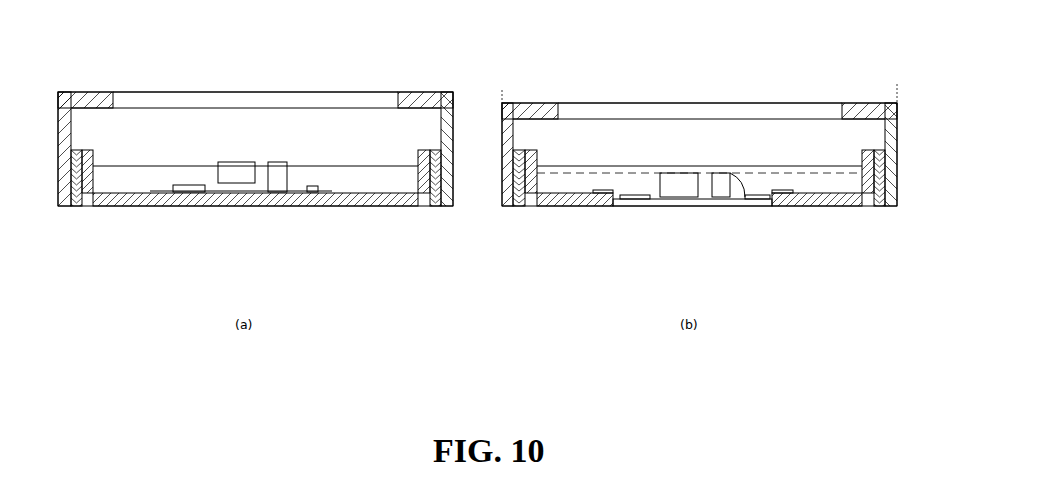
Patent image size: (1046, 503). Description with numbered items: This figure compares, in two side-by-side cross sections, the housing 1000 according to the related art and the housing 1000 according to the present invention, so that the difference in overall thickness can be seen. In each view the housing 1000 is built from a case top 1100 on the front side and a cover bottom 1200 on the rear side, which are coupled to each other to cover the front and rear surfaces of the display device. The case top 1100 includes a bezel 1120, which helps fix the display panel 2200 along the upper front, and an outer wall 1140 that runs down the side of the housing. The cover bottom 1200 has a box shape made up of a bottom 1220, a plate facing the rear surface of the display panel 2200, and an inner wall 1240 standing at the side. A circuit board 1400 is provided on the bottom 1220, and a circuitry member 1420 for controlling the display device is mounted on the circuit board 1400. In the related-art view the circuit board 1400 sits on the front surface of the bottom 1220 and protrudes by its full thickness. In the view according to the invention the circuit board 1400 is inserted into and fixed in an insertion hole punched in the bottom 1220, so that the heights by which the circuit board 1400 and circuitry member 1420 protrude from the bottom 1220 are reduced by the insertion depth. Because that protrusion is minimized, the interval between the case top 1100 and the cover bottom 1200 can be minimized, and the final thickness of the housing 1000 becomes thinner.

The housing 1000 is at (702, 36).
The case top 1100 is at (496, 115).
The bezel 1120 is at (858, 103).
The outer wall 1140 is at (898, 103).
The cover bottom 1200 is at (492, 216).
The bottom 1220 is at (852, 207).
The inner wall 1240 is at (884, 207).
The circuit board 1400 is at (625, 207).
The circuitry member 1420 is at (732, 207).
The display panel 2200 is at (757, 103).